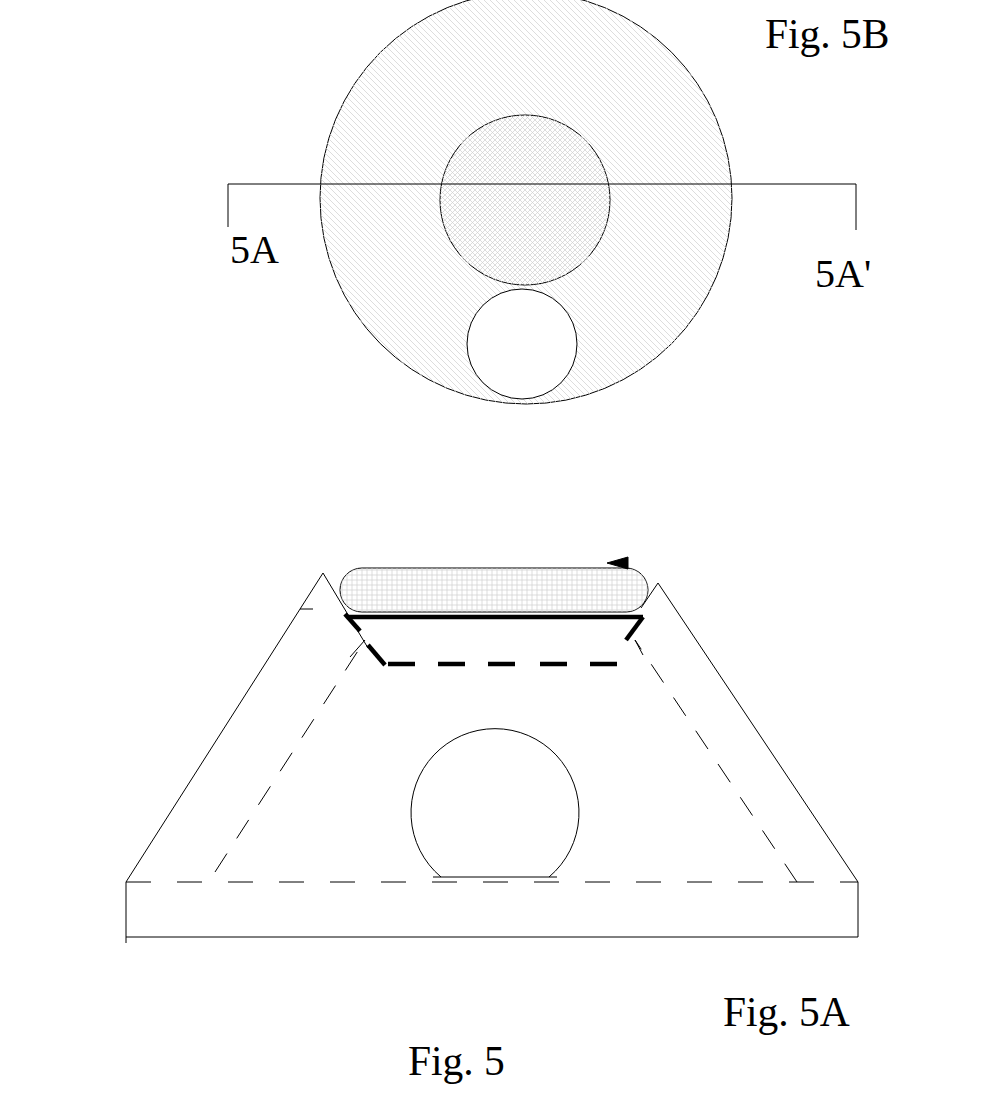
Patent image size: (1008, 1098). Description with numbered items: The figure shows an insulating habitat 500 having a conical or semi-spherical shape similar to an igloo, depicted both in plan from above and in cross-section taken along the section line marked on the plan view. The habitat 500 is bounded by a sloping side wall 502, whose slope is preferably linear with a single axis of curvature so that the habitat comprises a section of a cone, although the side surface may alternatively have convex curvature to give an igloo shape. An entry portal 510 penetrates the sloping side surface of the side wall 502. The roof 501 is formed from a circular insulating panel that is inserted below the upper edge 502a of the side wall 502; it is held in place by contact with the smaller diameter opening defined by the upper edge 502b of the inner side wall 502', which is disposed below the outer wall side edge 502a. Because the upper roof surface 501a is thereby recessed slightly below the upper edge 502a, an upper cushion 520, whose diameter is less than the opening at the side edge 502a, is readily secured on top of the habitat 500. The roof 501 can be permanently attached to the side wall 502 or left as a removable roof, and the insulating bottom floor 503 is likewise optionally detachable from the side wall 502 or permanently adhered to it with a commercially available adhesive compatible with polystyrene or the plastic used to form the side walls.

In FIG. 5, the habitat 500 is at (250, 512).
In FIG. 5A, the roof 501 is at (658, 637).
In FIG. 5A, the upper roof surface 501a is at (430, 615).
In FIG. 5B, the side wall 502 is at (396, 202).
In FIG. 5, the side wall 502 is at (436, 758).
In FIG. 5, the inner side wall 502' is at (506, 761).
In FIG. 5, the upper edge of side wall 502a is at (663, 580).
In FIG. 5, the upper edge of inner side wall 502b is at (352, 640).
In FIG. 5, the insulating bottom floor 503 is at (562, 912).
In FIG. 5B, the entry portal 510 is at (502, 348).
In FIG. 5, the entry portal 510 is at (578, 808).
In FIG. 5B, the upper cushion 520 is at (580, 240).
In FIG. 5A, the upper cushion 520 is at (628, 563).